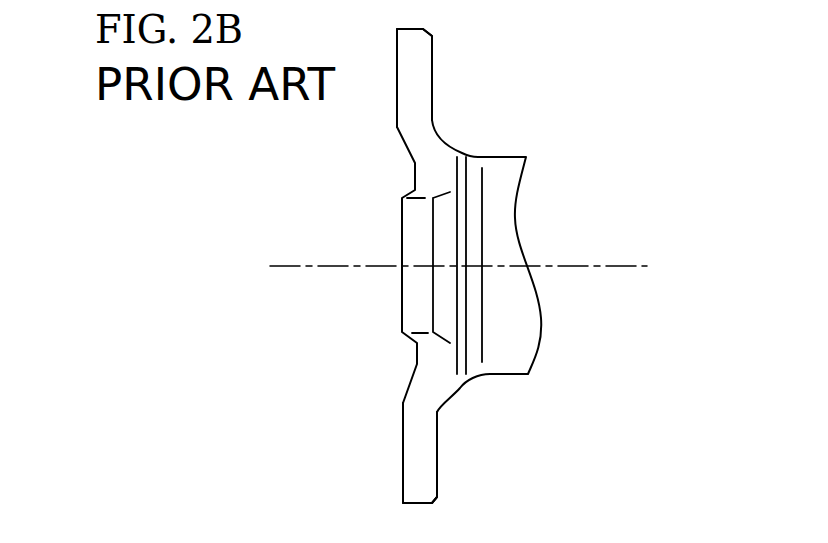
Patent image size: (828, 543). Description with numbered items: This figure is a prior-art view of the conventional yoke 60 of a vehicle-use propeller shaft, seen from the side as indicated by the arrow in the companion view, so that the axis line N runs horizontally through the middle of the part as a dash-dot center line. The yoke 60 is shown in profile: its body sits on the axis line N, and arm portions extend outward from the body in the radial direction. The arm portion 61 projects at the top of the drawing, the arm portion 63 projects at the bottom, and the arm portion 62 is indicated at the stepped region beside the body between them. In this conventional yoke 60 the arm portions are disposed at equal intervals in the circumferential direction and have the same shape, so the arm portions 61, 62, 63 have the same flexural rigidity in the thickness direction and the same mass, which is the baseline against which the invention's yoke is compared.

The yoke 60 is at (556, 111).
The arm portion 61 is at (420, 63).
The arm portion 62 is at (410, 221).
The arm portion 63 is at (423, 460).
The axis line N is at (628, 265).